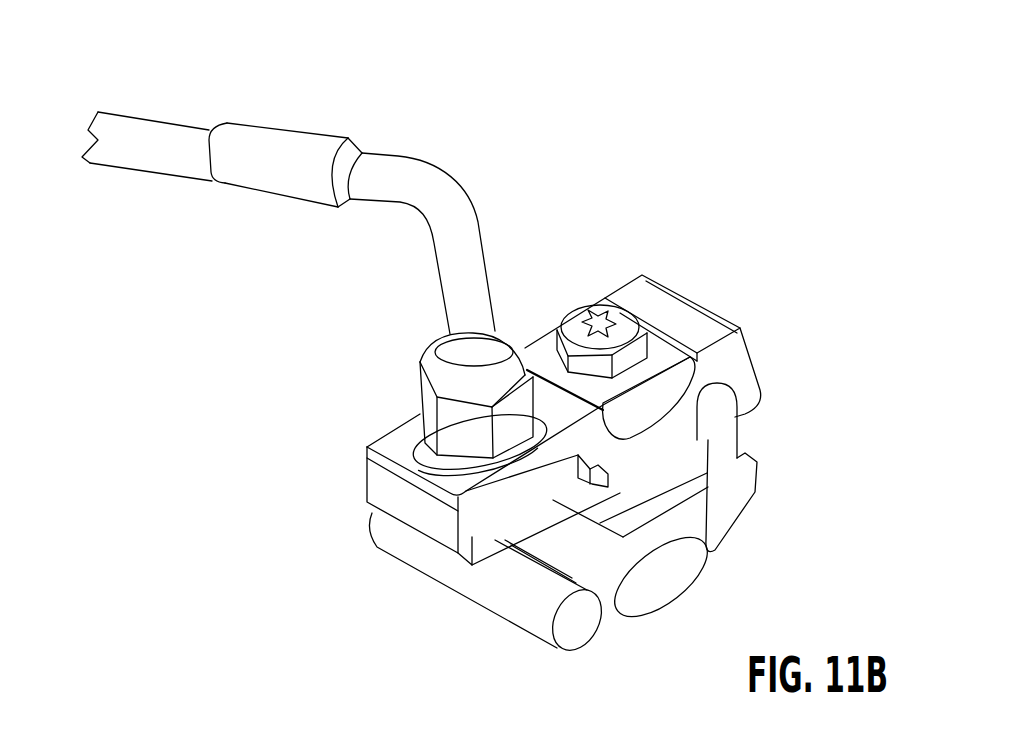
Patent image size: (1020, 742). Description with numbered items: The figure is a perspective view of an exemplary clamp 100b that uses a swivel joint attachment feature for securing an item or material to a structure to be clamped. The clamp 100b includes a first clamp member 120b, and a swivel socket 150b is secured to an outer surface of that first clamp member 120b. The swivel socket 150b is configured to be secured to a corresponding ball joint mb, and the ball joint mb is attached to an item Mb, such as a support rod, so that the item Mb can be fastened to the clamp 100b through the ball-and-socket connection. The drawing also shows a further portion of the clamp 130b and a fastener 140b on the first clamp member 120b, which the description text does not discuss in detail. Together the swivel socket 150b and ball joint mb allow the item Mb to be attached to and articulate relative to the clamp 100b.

The item Mb is at (147, 137).
The ball joint mb is at (473, 272).
The clamp 100b is at (633, 246).
The first clamp member 120b is at (708, 290).
The spring clip 130b is at (750, 545).
The screw 140b is at (577, 290).
The swivel socket 150b is at (450, 420).